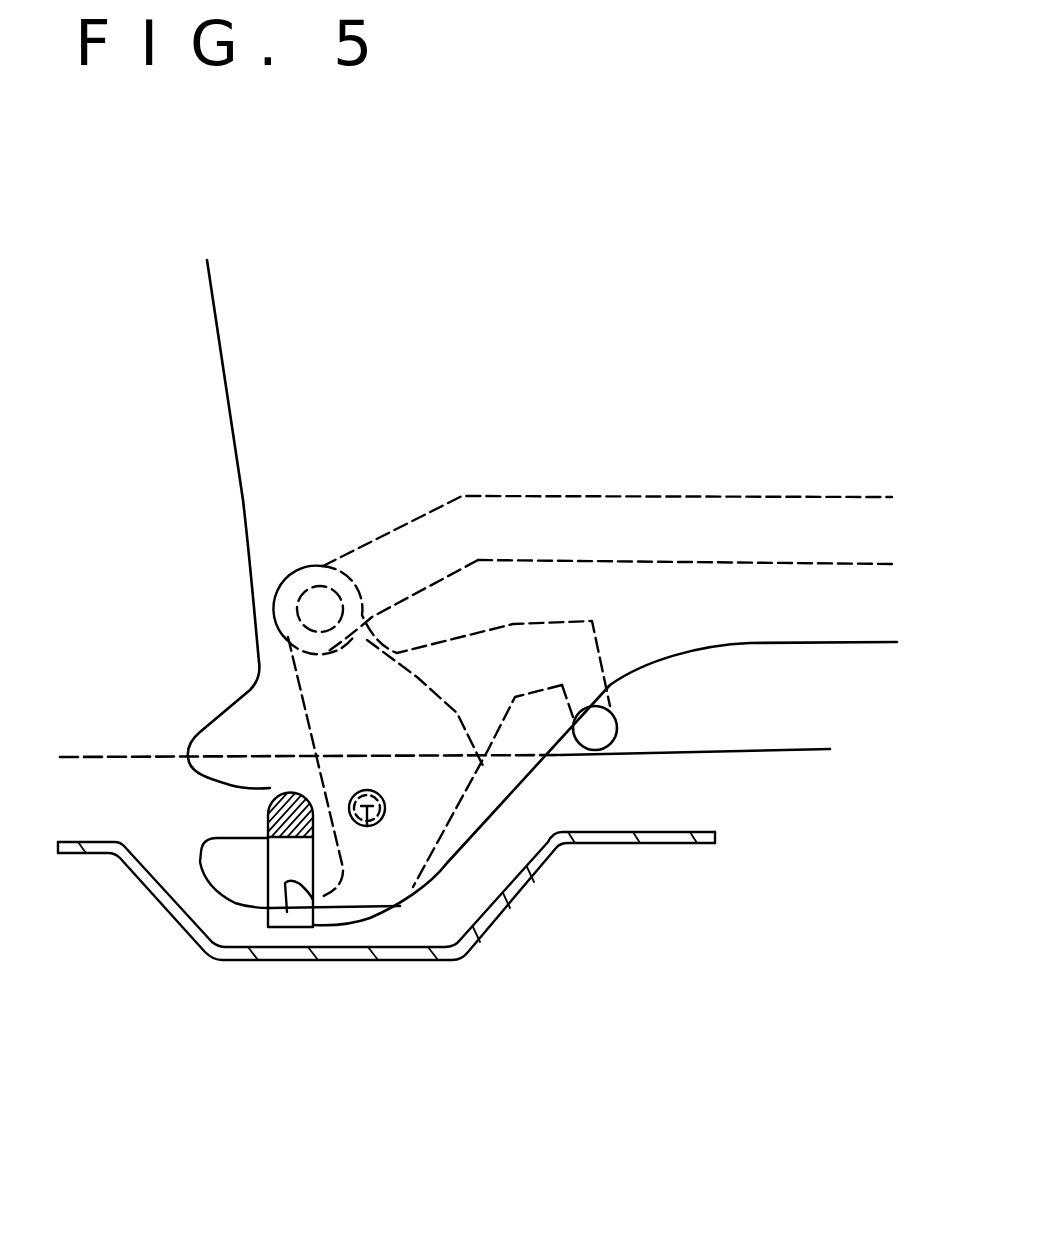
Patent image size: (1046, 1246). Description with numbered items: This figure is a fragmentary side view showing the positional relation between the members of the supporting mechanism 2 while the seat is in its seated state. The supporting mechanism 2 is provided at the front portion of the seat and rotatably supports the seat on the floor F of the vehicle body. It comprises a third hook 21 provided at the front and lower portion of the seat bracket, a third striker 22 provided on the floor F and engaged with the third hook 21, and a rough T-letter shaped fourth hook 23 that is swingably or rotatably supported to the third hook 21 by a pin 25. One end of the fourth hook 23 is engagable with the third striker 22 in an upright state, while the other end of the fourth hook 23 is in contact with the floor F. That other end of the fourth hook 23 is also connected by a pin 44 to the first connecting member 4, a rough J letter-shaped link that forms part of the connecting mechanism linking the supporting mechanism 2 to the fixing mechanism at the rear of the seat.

The third hook 21 is at (242, 358).
The supporting mechanism 2 is at (165, 617).
The first connecting member 4 is at (762, 533).
The third striker 22 is at (268, 835).
The fourth hook 23 is at (413, 673).
The pin 25 is at (367, 826).
The pin 44 is at (500, 788).
The floor F is at (623, 832).